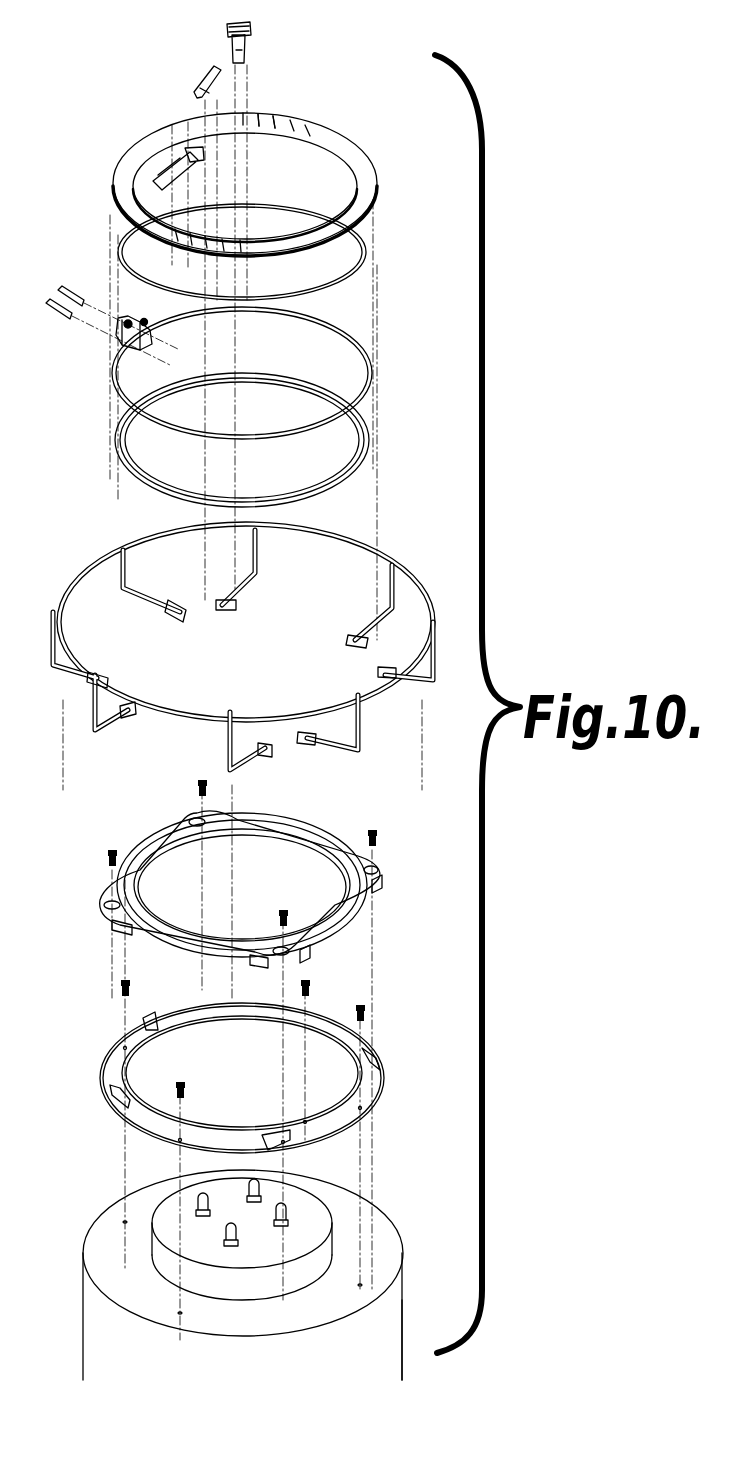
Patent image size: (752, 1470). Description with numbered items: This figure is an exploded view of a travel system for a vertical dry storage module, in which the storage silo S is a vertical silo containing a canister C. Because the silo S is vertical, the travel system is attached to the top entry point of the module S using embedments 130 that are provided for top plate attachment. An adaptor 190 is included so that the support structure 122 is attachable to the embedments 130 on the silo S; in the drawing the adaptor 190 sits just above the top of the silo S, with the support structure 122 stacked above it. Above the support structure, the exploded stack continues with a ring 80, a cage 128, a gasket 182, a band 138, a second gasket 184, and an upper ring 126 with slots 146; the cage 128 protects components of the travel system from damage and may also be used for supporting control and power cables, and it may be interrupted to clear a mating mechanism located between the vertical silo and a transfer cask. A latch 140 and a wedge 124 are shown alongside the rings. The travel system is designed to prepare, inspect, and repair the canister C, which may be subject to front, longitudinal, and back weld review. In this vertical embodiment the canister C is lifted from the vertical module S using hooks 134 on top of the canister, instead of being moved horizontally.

The wedge 124 is at (196, 82).
The slots 146 is at (281, 114).
The upper ring 126 is at (338, 134).
The gasket 184 is at (366, 232).
The latch 140 is at (122, 320).
The band 138 is at (368, 356).
The gasket 182 is at (368, 436).
The cage 128 is at (380, 550).
The flange ring 80 is at (310, 830).
The support structure 122 is at (350, 910).
The adaptor 190 is at (385, 1068).
The hooks 134 is at (290, 1205).
The canister C is at (330, 1215).
The embedments 130 is at (360, 1285).
The storage silo S is at (400, 1320).